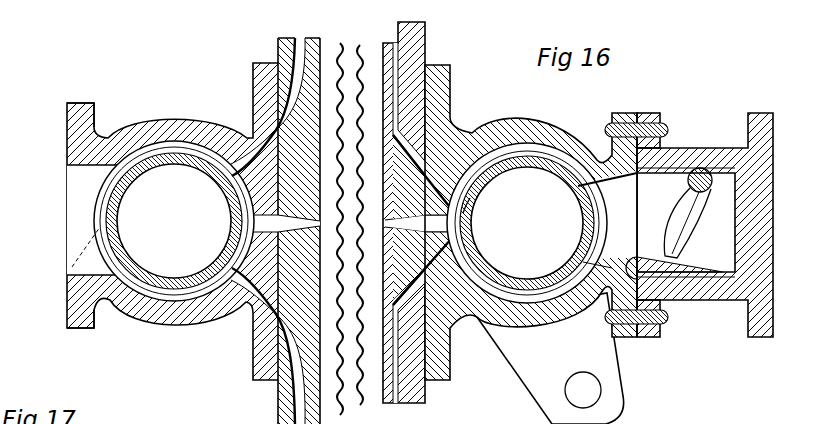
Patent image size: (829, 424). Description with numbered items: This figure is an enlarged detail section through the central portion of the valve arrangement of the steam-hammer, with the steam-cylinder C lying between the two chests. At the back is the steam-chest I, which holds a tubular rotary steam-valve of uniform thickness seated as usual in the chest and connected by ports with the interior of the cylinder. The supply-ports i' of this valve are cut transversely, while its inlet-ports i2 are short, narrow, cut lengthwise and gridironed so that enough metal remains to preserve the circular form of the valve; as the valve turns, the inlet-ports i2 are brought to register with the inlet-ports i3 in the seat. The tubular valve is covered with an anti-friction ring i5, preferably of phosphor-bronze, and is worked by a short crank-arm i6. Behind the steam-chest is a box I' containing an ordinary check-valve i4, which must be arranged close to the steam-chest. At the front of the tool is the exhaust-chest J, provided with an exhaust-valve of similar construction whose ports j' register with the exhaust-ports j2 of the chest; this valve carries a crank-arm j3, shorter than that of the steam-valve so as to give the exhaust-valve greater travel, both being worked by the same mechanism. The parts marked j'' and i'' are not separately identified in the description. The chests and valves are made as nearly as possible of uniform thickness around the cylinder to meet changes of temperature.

The exhaust-chest J is at (170, 323).
The ports j' is at (174, 225).
The valve seat j'' is at (174, 221).
The exhaust-ports j2 is at (297, 52).
The crank-arm j3 is at (107, 312).
The steam-cylinder C is at (350, 233).
The steam-chest I is at (515, 222).
The box I' is at (689, 225).
The supply-ports i' is at (527, 223).
The port i'' is at (607, 220).
The inlet-ports i2 is at (478, 257).
The inlet-ports i3 is at (400, 53).
The check-valves i4 is at (693, 233).
The anti-friction ring i5 is at (600, 238).
The crank-arm i6 is at (550, 358).